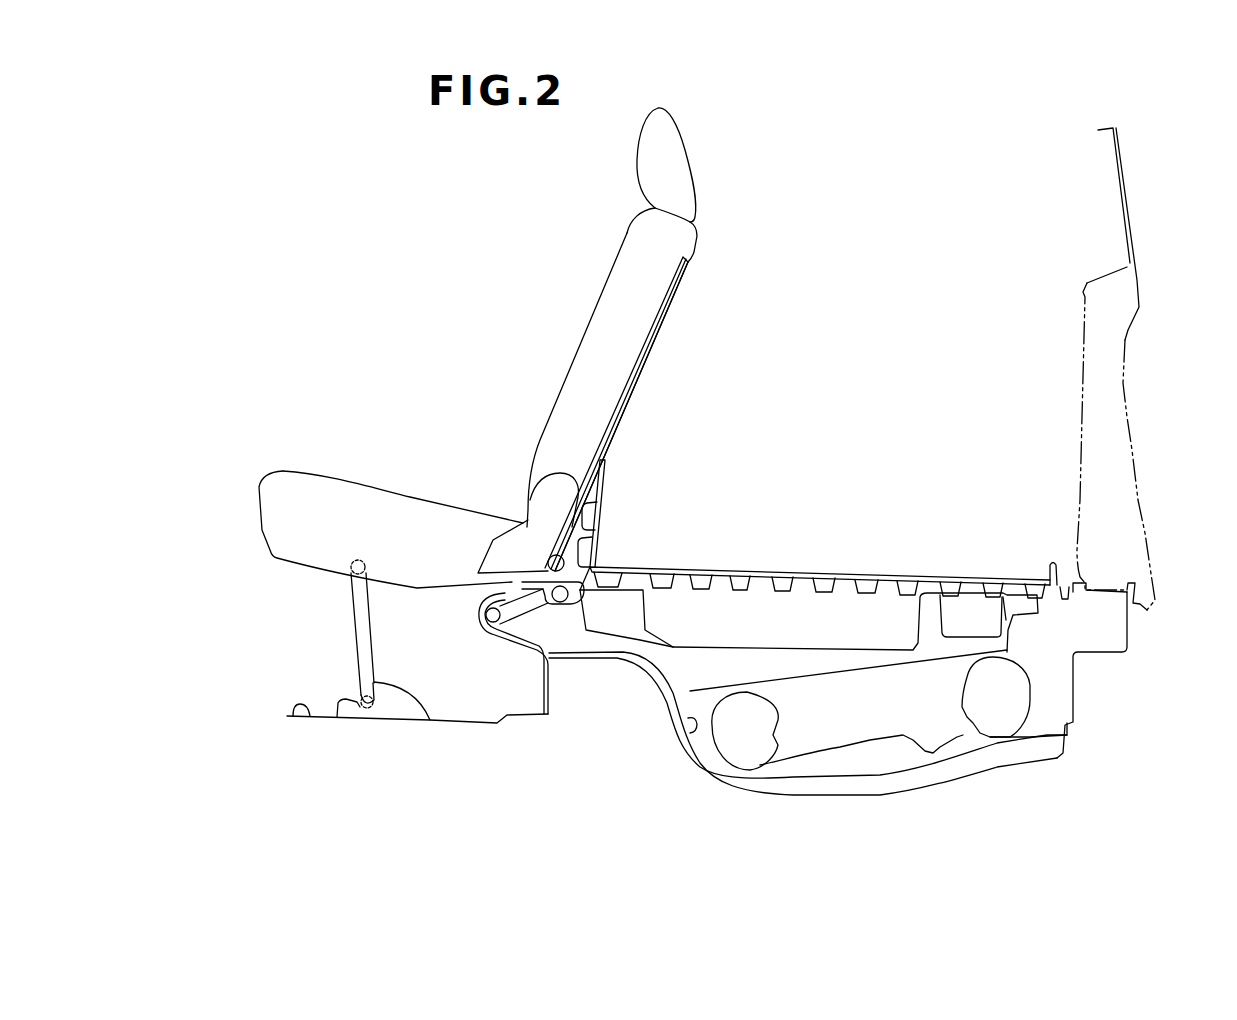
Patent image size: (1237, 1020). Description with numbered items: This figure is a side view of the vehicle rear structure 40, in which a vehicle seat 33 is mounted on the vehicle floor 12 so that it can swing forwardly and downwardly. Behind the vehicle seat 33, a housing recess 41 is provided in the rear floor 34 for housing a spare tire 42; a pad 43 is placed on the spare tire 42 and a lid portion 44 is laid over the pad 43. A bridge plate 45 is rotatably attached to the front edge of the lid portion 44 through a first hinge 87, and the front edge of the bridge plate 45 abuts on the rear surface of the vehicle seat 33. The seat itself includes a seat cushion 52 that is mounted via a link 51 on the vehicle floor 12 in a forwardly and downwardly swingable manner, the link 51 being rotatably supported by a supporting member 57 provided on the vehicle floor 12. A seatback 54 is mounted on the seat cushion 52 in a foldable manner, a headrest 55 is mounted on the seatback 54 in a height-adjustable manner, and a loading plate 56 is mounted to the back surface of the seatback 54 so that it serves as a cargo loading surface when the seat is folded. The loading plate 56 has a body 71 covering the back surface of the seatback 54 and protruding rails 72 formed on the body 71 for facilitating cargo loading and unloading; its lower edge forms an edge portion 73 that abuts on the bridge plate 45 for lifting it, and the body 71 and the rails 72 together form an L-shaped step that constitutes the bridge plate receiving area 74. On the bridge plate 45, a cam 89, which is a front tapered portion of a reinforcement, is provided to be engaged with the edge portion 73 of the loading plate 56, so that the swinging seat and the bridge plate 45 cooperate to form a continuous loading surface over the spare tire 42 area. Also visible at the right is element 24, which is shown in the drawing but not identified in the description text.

The vehicle floor 12 is at (288, 716).
The center pillar 24 is at (1128, 233).
The vehicle seat 33 is at (524, 336).
The rear floor 34 is at (1003, 561).
The vehicle rear structure 40 is at (356, 163).
The housing recess 41 is at (690, 724).
The spare tire 42 is at (1010, 703).
The pad 43 is at (767, 660).
The lid portion 44 is at (890, 578).
The bridge plate 45 is at (604, 500).
The link 51 is at (352, 620).
The seat cushion 52 is at (338, 495).
The seatback 54 is at (611, 292).
The headrest 55 is at (674, 160).
The loading plate 56 is at (681, 272).
The supporting member 57 is at (364, 710).
The body 71 is at (664, 320).
The protruding rails 72 is at (645, 363).
The edge portion 73 is at (548, 577).
The bridge plate receiving area 74 is at (553, 580).
The first hinge 87 is at (595, 565).
The cam 89 is at (604, 467).